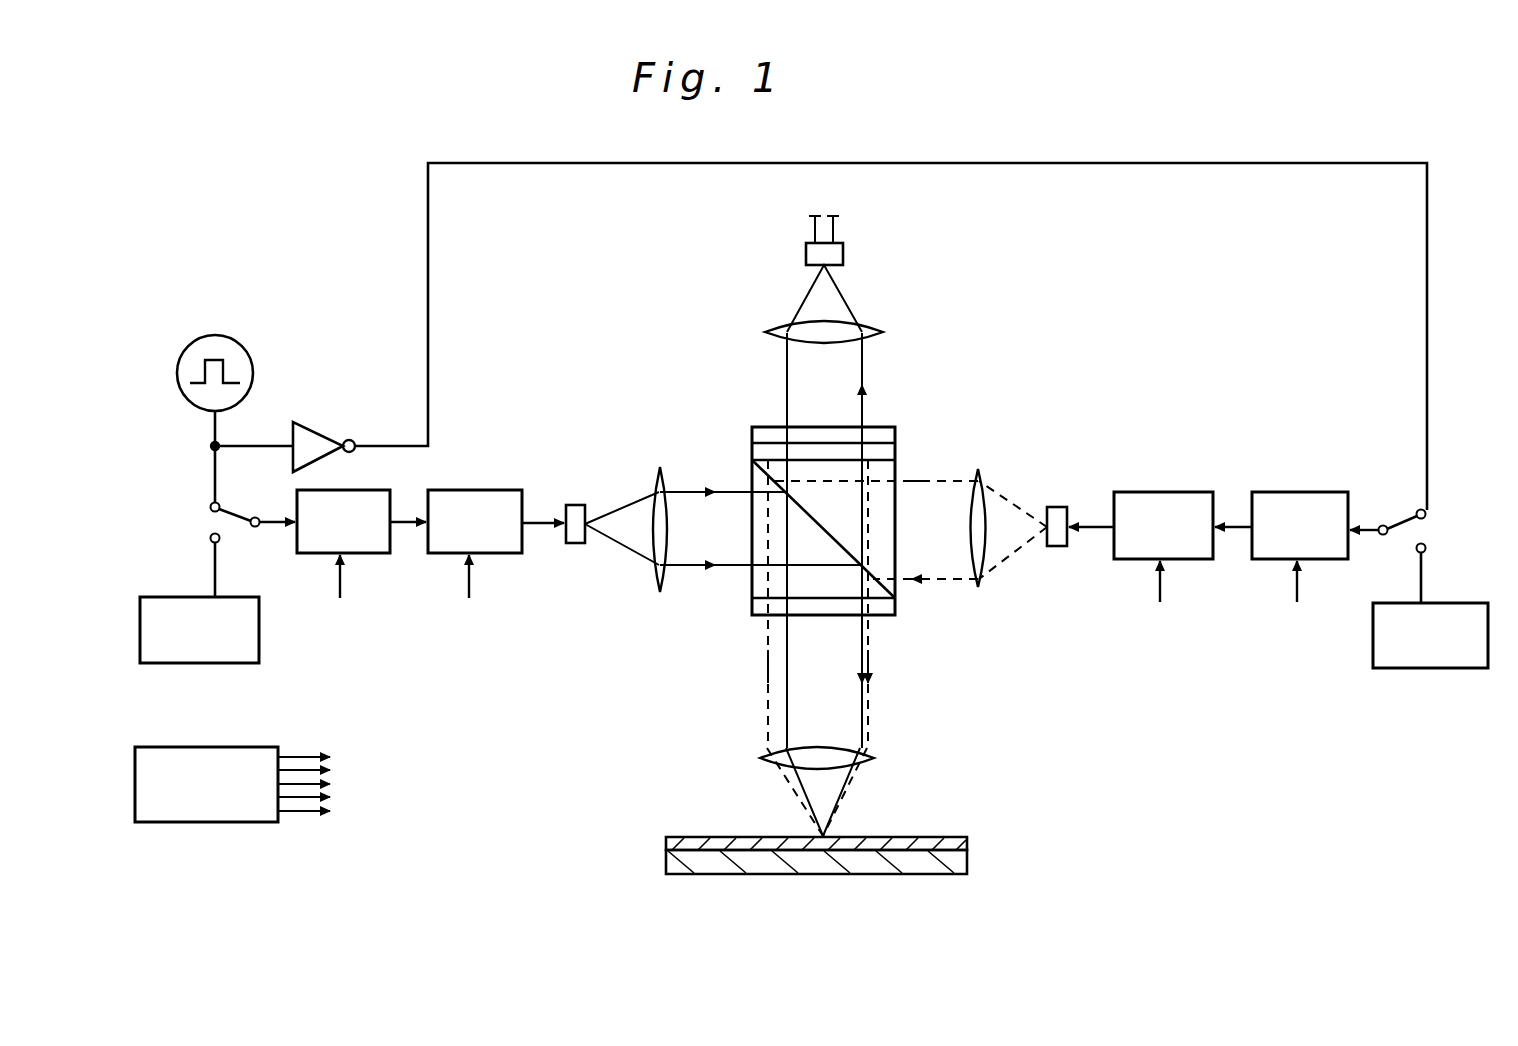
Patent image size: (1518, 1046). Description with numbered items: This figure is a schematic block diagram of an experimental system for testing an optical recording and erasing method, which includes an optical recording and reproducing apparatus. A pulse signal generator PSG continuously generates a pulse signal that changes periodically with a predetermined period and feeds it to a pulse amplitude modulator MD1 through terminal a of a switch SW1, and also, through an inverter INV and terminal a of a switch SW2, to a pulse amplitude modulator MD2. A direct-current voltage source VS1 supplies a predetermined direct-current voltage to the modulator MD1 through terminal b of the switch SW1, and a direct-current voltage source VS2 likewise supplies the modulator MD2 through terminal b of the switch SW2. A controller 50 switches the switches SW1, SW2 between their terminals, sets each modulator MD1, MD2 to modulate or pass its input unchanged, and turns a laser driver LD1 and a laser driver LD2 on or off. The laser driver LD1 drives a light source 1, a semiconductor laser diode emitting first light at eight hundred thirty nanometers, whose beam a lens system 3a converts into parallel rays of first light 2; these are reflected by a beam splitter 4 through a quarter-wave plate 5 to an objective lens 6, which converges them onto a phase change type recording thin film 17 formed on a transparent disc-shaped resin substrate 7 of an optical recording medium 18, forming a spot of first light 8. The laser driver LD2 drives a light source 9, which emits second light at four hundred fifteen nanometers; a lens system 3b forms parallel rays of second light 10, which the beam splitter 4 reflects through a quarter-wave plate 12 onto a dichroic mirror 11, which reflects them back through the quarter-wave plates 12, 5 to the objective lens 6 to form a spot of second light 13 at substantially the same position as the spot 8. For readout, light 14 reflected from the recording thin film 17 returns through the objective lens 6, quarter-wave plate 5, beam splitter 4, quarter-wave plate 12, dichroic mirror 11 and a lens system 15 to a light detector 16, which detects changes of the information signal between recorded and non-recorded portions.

The light source 1 is at (578, 505).
The parallel rays of first light 2 is at (690, 567).
The lens system 3a is at (655, 470).
The lens system 3b is at (985, 589).
The beam splitter 4 is at (749, 582).
The quarter-wave plate 5 is at (883, 610).
The objective lens 6 is at (872, 758).
The substrate 7 is at (847, 851).
The spot of first light 8 is at (830, 830).
The light source 9 is at (1055, 507).
The parallel rays of second light 10 is at (962, 478).
The dichroic mirror 11 is at (888, 432).
The quarter-wave plate 12 is at (888, 452).
The spot of second light 13 is at (818, 833).
The reflected light 14 is at (786, 400).
The lens system 15 is at (872, 328).
The light detector 16 is at (840, 252).
The recording thin film 17 is at (968, 843).
The optical recording medium 18 is at (880, 827).
The controller 50 is at (265, 747).
The pulse signal generator PSG is at (233, 336).
The inverter INV is at (320, 437).
The switch SW1 is at (240, 517).
The switch SW2 is at (1402, 520).
The pulse amplitude modulator MD1 is at (350, 490).
The pulse amplitude modulator MD2 is at (1300, 492).
The laser driver LD1 is at (465, 490).
The laser driver LD2 is at (1165, 492).
The direct-current voltage source VS1 is at (212, 664).
The direct-current voltage source VS2 is at (1430, 670).